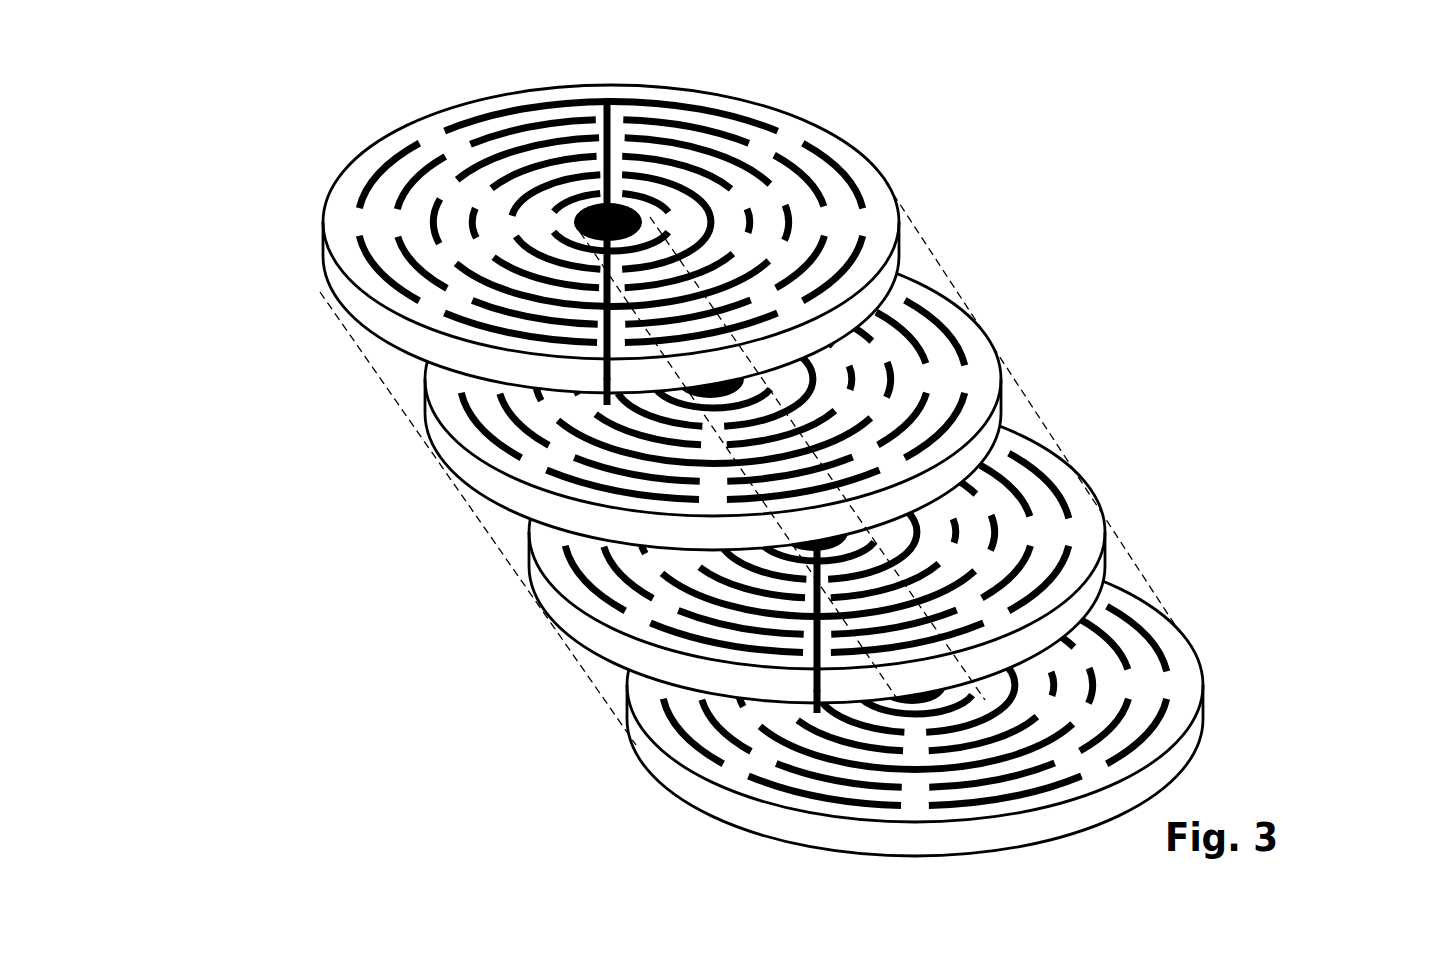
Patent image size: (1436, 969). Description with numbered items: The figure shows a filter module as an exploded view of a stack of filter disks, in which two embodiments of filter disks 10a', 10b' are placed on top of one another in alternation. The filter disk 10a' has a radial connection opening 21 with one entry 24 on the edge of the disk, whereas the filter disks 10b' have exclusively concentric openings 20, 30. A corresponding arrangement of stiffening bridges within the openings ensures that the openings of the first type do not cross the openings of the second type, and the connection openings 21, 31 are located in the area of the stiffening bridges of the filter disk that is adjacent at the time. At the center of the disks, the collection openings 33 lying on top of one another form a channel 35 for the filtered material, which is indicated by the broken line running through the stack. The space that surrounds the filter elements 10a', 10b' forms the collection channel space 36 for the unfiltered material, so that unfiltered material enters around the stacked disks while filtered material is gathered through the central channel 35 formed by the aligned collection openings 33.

The filter disk 10a' is at (836, 394).
The filter disk 10b' is at (915, 549).
The concentric opening 20 is at (933, 312).
The concentric opening 30 is at (920, 403).
The connection opening 31 is at (614, 118).
The collection opening 33 is at (588, 237).
The radial connection opening 21 is at (605, 317).
The entry 24 is at (605, 380).
The channel 35 is at (816, 630).
The collection channel space 36 is at (252, 326).